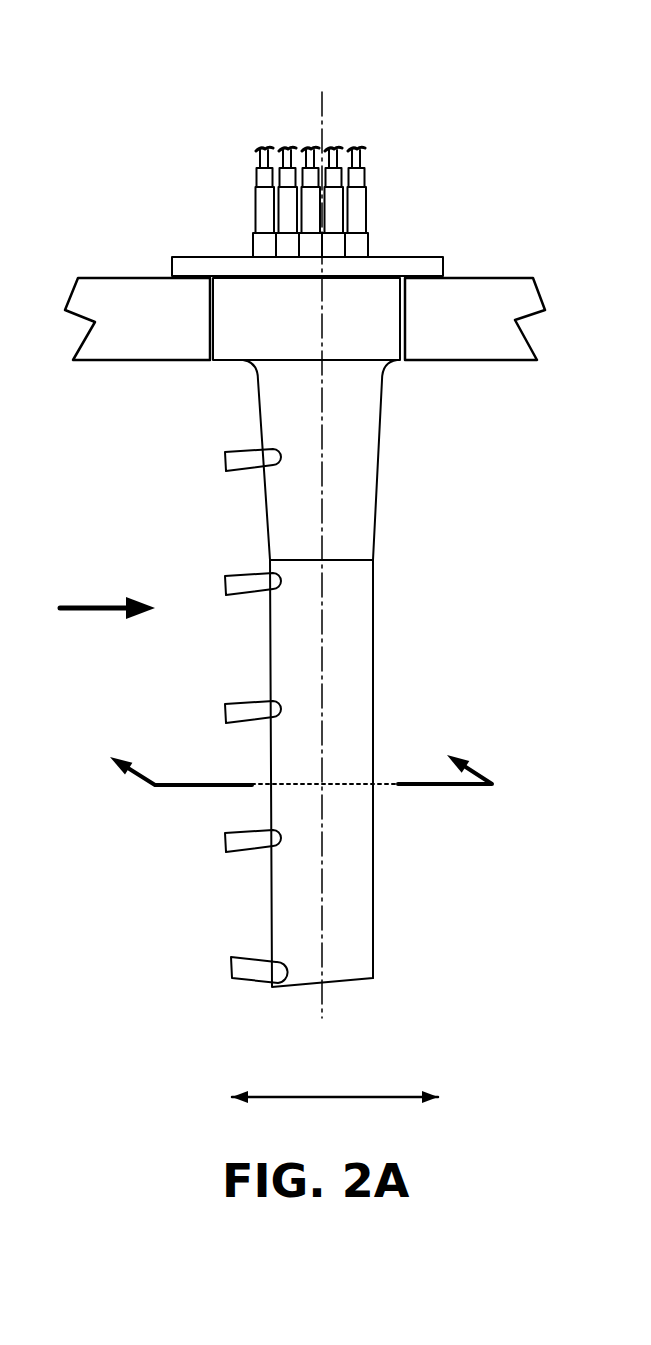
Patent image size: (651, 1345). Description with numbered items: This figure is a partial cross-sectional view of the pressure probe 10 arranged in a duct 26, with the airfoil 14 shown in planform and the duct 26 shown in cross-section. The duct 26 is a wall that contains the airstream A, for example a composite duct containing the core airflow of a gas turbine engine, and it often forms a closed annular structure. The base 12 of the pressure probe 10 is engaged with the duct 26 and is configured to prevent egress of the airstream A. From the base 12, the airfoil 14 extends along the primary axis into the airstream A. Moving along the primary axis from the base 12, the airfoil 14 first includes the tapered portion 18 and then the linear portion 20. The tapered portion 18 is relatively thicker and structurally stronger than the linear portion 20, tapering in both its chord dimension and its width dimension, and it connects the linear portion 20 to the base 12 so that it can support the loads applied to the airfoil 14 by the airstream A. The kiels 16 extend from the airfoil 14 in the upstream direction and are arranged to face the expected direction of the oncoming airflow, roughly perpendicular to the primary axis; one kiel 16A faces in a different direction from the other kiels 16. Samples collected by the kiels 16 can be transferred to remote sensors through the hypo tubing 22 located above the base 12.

The pressure probe 10 is at (125, 124).
The base 12 is at (433, 258).
The airfoil 14 is at (400, 598).
The kiels 16 is at (222, 840).
The kiel 16A is at (228, 967).
The tapered portion 18 is at (352, 415).
The linear portion 20 is at (373, 672).
The hypo tubing 22 is at (237, 200).
The duct 26 is at (139, 325).